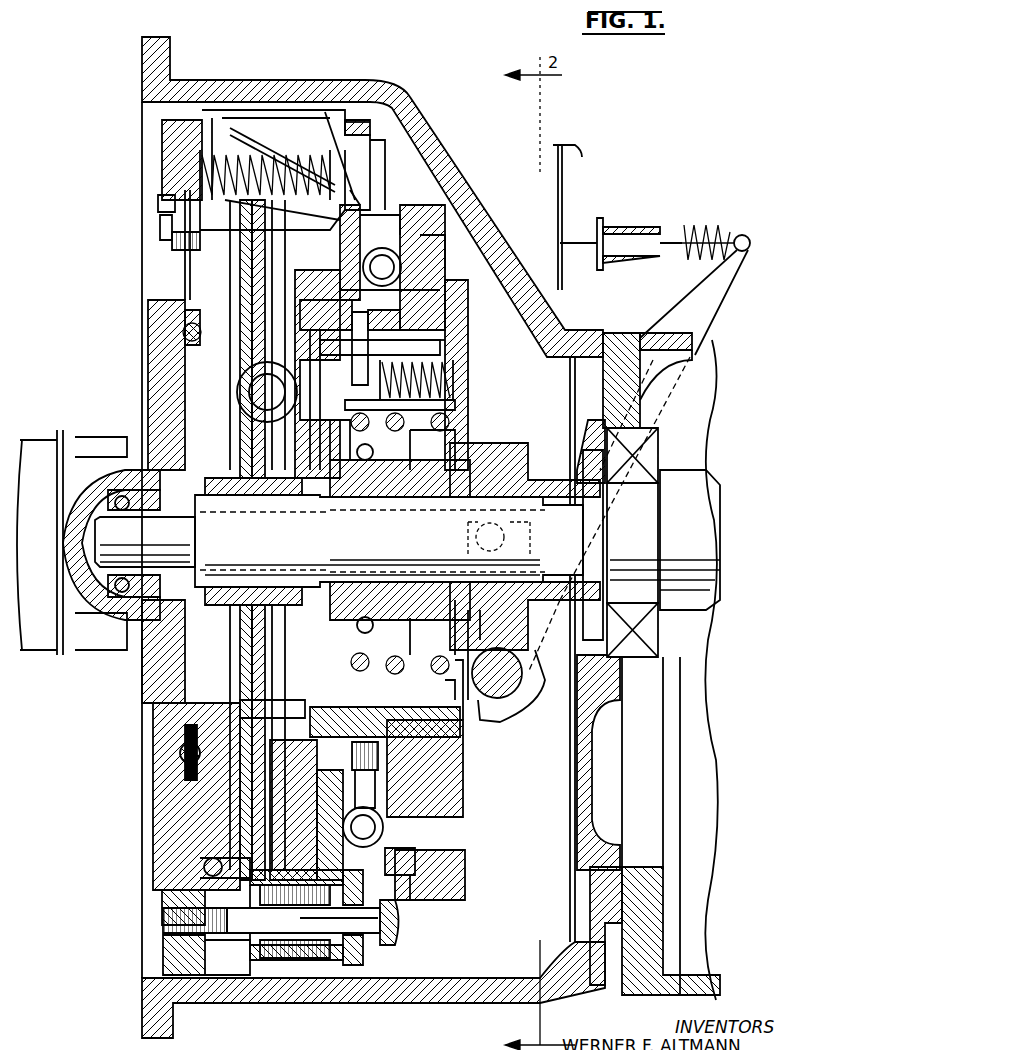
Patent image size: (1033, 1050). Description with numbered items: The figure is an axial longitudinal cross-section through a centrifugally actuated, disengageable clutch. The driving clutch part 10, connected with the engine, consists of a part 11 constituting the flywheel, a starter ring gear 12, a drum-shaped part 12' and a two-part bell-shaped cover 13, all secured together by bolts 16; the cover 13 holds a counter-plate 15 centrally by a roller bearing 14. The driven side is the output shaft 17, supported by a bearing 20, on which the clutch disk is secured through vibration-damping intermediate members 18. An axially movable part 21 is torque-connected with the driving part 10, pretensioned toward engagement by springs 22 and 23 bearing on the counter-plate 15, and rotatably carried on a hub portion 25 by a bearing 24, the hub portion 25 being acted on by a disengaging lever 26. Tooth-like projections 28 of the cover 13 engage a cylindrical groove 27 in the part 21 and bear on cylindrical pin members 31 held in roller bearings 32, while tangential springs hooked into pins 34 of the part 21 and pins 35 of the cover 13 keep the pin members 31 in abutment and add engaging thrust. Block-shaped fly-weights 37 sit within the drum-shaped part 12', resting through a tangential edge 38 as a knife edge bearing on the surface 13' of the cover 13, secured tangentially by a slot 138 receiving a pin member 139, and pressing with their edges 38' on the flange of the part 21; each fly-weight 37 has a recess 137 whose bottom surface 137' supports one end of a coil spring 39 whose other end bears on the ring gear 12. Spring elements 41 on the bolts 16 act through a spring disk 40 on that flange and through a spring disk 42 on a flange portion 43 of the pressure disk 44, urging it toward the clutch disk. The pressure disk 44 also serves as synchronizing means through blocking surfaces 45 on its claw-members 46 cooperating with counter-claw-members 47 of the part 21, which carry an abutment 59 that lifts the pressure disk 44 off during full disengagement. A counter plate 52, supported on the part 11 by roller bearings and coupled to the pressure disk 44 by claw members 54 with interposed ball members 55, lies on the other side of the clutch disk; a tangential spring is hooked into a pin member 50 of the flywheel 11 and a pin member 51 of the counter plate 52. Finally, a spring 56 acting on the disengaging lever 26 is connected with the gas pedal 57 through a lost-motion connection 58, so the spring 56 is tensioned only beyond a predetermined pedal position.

The driving clutch part 10 is at (128, 322).
The fly-wheel part 11 is at (170, 300).
The starter ring gear 12 is at (236, 170).
The drum-shaped part 12' is at (271, 123).
The bell-shaped cover 13 is at (386, 173).
The surface of bell-shaped cover 13' is at (384, 178).
The roller bearing 14 is at (455, 345).
The counter-plate 15 is at (455, 378).
The bolts 16 is at (382, 925).
The output shaft 17 is at (522, 512).
The vibration-damping intermediate members 18 is at (240, 410).
The bearing 20 is at (113, 560).
The axially movable part 21 is at (380, 758).
The spring 22 is at (455, 432).
The spring 23 is at (458, 392).
The bearing 24 is at (365, 503).
The hub portion 25 is at (500, 452).
The disengaging lever 26 is at (705, 312).
The groove 27 is at (350, 712).
The tooth-like projections 28 is at (395, 732).
The cylindrical pin members 31 is at (370, 330).
The roller bearings 32 is at (455, 277).
The pins 34 is at (377, 800).
The pins 35 is at (418, 895).
The fly-weights 37 is at (330, 118).
The tangentially extending edge 38 is at (397, 143).
The edge 38' is at (440, 267).
The coil spring 39 is at (200, 172).
The spring disk 40 is at (365, 948).
The spring element 41 is at (305, 965).
The spring disk 42 is at (250, 960).
The flange portion 43 is at (225, 872).
The pressure disk 44 is at (292, 890).
The blocking surfaces 45 is at (325, 365).
The claw-members 46 is at (440, 275).
The counter-claw-members 47 is at (185, 740).
The pin member 50 is at (160, 222).
The pin member 51 is at (172, 248).
The counter plate 52 is at (215, 822).
The claw members 54 is at (186, 268).
The ball members 55 is at (158, 203).
The spring 56 is at (690, 235).
The gas pedal 57 is at (564, 190).
The lost-motion connection 58 is at (625, 230).
The abutment 59 is at (300, 762).
The recess 137 is at (282, 119).
The bottom surface of recess 137' is at (322, 195).
The slot 138 is at (360, 108).
The pin member 139 is at (372, 128).